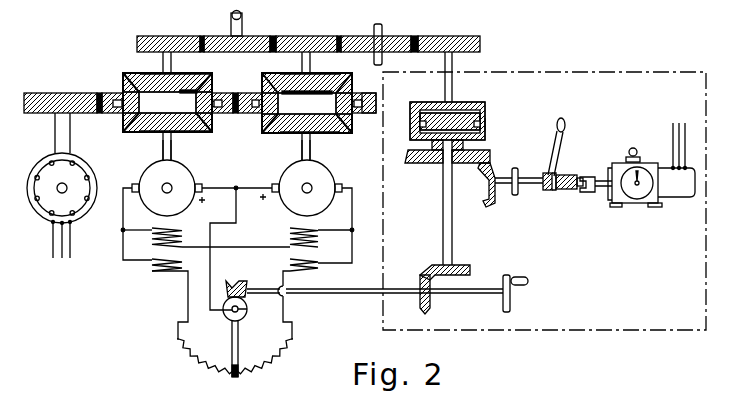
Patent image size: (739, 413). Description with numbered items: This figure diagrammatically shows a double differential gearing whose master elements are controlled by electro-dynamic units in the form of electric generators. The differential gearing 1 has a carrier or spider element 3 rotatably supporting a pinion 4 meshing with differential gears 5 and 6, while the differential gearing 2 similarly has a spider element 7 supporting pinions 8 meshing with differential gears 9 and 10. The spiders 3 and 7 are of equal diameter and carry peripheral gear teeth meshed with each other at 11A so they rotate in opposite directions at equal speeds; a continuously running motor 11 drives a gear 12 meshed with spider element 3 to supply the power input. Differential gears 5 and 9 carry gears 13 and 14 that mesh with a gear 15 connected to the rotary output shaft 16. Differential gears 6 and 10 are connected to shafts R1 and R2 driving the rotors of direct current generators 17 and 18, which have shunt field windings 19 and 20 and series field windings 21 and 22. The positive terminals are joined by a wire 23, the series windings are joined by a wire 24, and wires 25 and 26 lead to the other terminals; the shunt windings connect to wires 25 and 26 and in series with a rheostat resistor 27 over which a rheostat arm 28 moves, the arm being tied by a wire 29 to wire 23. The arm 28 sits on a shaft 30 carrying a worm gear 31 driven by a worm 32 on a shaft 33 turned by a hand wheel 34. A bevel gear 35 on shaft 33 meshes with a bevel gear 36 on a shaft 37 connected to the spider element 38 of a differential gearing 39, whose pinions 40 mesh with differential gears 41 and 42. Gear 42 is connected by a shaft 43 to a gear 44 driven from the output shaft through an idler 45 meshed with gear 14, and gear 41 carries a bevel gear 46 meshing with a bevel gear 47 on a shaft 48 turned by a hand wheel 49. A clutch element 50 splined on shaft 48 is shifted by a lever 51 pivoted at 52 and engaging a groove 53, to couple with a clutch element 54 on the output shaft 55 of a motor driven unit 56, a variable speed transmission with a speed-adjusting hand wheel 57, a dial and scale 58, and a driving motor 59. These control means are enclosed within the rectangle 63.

The differential gearing 1 is at (133, 135).
The differential gearing 2 is at (339, 138).
The carrier or spider element 3 is at (112, 93).
The pinion 4 is at (124, 78).
The differential gear 5 is at (199, 74).
The differential gear 6 is at (190, 132).
The carrier or spider element 7 is at (358, 93).
The pinion 8 is at (262, 92).
The differential gear 9 is at (296, 74).
The differential gear 10 is at (285, 133).
The motor 11 is at (40, 206).
The meshed gear teeth 11A is at (240, 114).
The gear 12 is at (40, 93).
The gear or pinion 13 is at (147, 36).
The gear or pinion 14 is at (305, 36).
The gear 15 is at (270, 36).
The power output element 16 is at (231, 17).
The electric generator 17 is at (184, 178).
The electric generator 18 is at (282, 178).
The shunt field winding 19 is at (165, 273).
The shunt field winding 20 is at (318, 270).
The series field winding 21 is at (180, 233).
The series field winding 22 is at (300, 229).
The wire 23 is at (236, 188).
The wire 24 is at (228, 247).
The wire 25 is at (123, 206).
The wire 26 is at (352, 224).
The rheostat resistor 27 is at (212, 362).
The rheostat arm 28 is at (240, 356).
The wire 29 is at (210, 261).
The shaft 30 is at (245, 312).
The worm gear 31 is at (247, 306).
The worm 32 is at (245, 283).
The shaft 33 is at (333, 294).
The hand wheel 34 is at (510, 295).
The bevel gear 35 is at (420, 307).
The bevel gear 36 is at (437, 265).
The shaft 37 is at (452, 241).
The spider element 38 is at (461, 103).
The differential gearing 39 is at (487, 124).
The pinion 40 is at (419, 124).
The differential gear 41 is at (415, 144).
The differential gear 42 is at (431, 102).
The shaft 43 is at (452, 70).
The gear 44 is at (450, 36).
The idler 45 is at (390, 36).
The bevel gear 46 is at (430, 160).
The bevel gear 47 is at (487, 207).
The shaft 48 is at (498, 179).
The hand wheel 49 is at (517, 195).
The clutch element 50 is at (561, 175).
The lever 51 is at (552, 161).
The pivot 52 is at (566, 138).
The groove 53 is at (548, 192).
The clutch element 54 is at (589, 177).
The output shaft 55 is at (605, 187).
The motor driven unit 56 is at (643, 209).
The hand wheel 57 is at (634, 152).
The dial and scale 58 is at (635, 196).
The motor 59 is at (681, 198).
The rectangle 63 is at (565, 330).
The shaft R1 is at (165, 150).
The shaft R2 is at (310, 152).